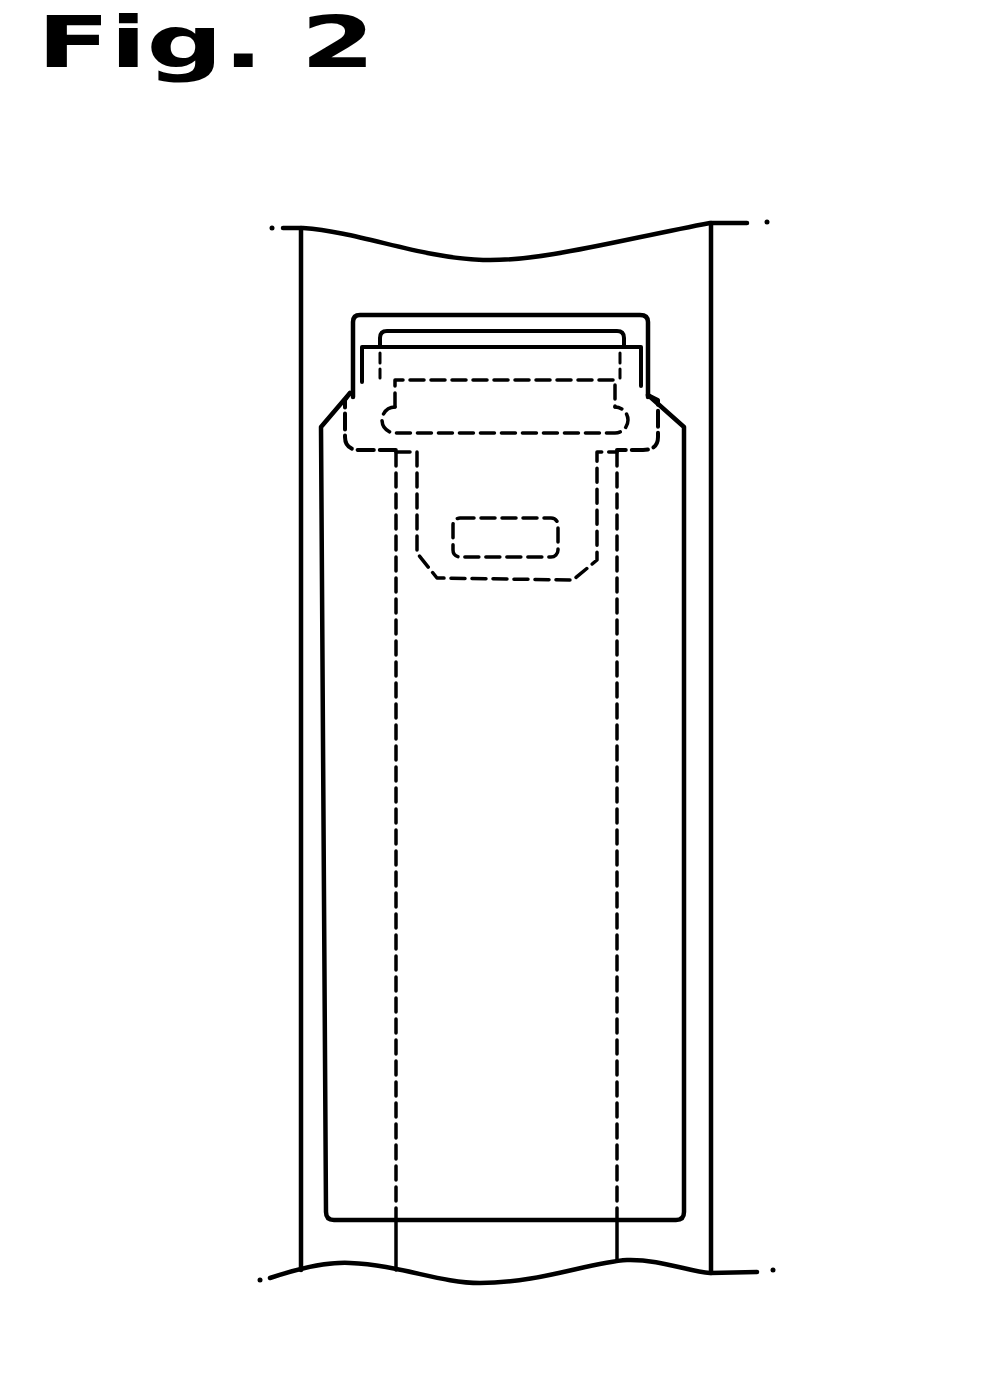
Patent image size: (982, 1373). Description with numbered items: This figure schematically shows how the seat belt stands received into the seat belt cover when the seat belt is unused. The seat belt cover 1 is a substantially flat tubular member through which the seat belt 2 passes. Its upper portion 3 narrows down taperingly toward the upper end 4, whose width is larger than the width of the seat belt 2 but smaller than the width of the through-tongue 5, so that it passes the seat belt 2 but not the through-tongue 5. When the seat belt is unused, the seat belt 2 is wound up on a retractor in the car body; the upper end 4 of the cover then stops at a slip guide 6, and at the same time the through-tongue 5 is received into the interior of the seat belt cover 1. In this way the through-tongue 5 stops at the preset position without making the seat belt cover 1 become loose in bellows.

The seat belt cover 1 is at (650, 677).
The seat belt 2 is at (605, 950).
The upper portion 3 is at (643, 367).
The upper end 4 is at (657, 315).
The through-tongue 5 is at (585, 500).
The slip guide 6 is at (360, 313).